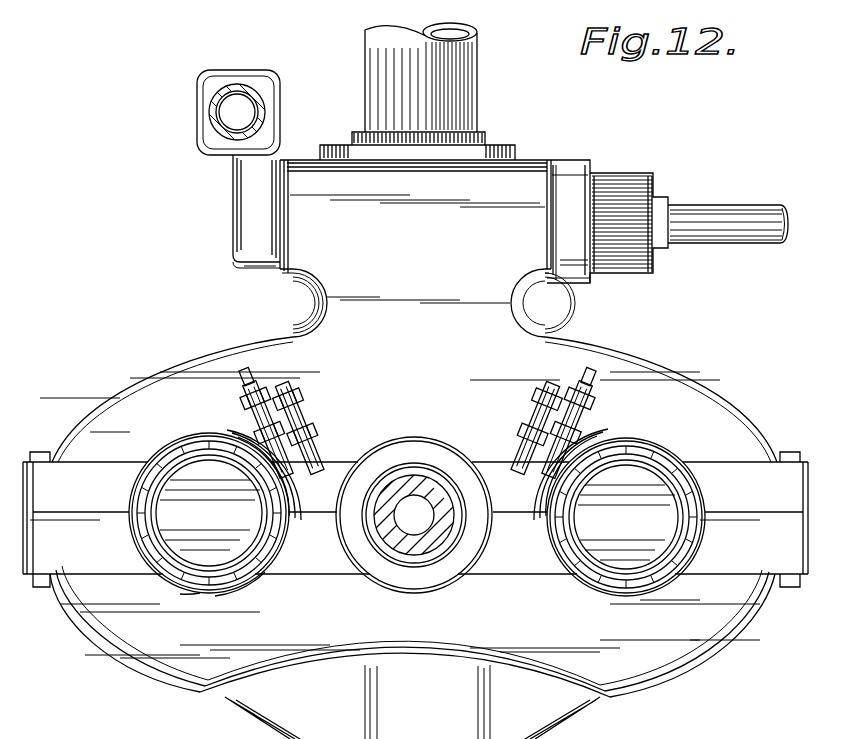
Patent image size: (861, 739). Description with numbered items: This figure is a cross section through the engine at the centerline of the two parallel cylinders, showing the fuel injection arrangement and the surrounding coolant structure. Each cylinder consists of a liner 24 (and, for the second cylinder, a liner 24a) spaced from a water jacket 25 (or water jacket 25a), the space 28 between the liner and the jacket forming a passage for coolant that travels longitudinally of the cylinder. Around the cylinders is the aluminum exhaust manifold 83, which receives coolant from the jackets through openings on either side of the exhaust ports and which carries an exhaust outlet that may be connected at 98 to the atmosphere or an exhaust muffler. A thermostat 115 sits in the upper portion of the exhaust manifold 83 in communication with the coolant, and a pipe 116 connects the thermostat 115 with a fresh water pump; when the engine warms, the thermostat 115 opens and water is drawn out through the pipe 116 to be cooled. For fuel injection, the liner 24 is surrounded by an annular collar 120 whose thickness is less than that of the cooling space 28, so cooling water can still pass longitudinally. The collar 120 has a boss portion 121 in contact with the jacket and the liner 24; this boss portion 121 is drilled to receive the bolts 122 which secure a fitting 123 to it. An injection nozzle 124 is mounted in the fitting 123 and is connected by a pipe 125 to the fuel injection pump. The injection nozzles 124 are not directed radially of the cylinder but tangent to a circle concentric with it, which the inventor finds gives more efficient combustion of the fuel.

The exhaust manifold 83 is at (663, 357).
The exhaust outlet connection 98 is at (478, 70).
The thermostat 115 is at (632, 173).
The pipe 116 is at (738, 205).
The liner 24 is at (160, 482).
The liner 24a is at (640, 568).
The water jacket 25 is at (197, 441).
The water jacket 25a is at (647, 442).
The coolant space 28 is at (187, 586).
The annular collar 120 is at (228, 590).
The boss portion 121 is at (272, 518).
The bolts 122 is at (242, 408).
The fitting 123 is at (315, 438).
The injection nozzle 124 is at (326, 404).
The pipe 125 is at (268, 378).